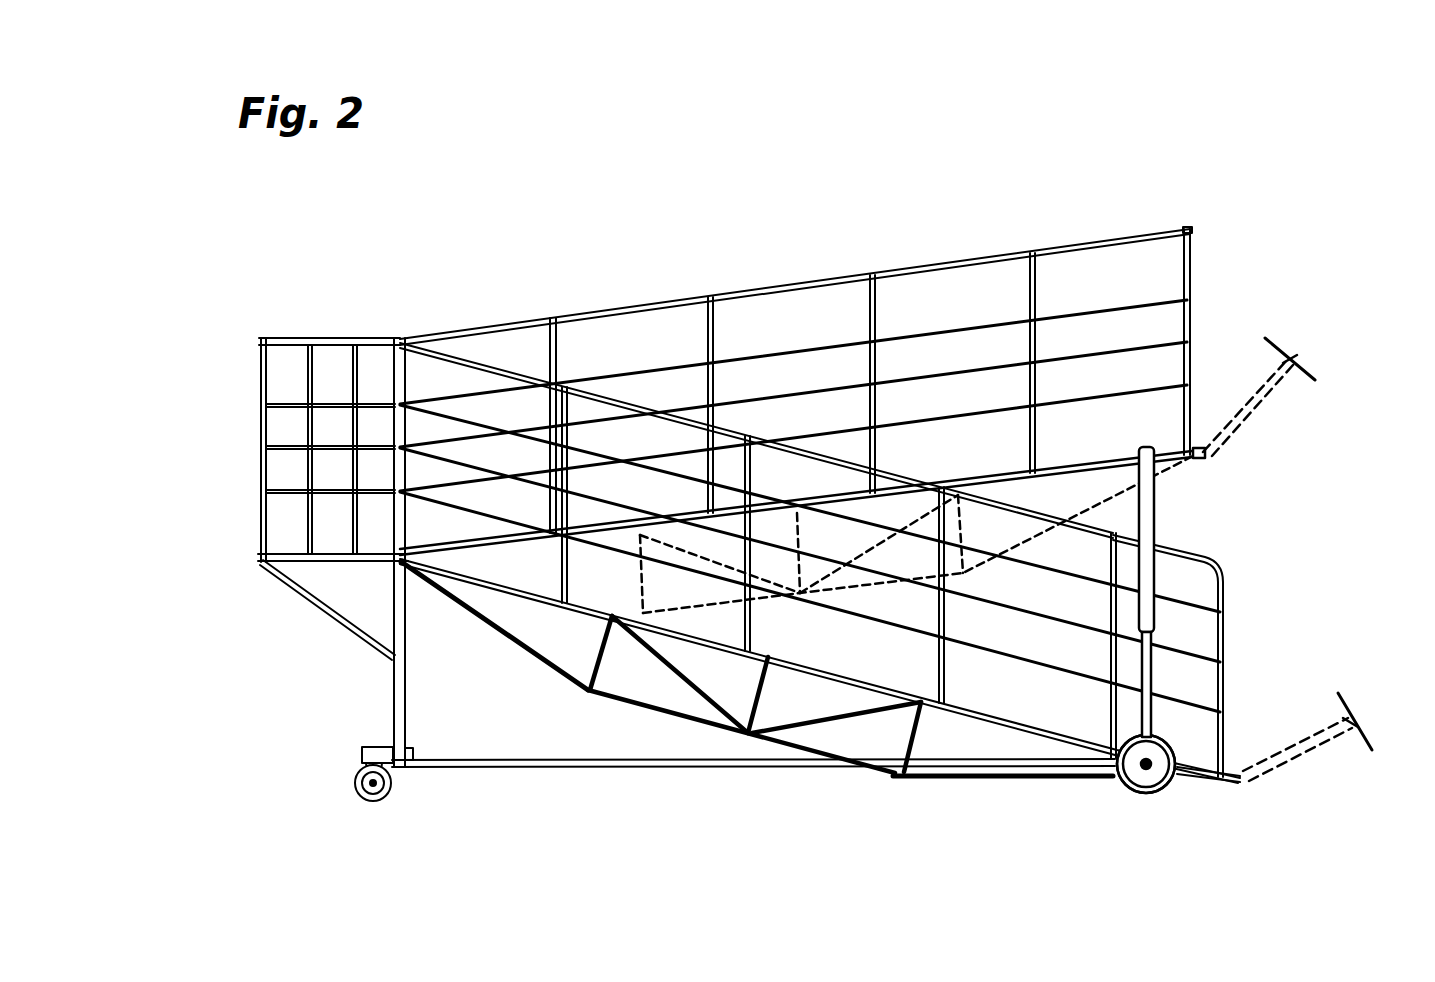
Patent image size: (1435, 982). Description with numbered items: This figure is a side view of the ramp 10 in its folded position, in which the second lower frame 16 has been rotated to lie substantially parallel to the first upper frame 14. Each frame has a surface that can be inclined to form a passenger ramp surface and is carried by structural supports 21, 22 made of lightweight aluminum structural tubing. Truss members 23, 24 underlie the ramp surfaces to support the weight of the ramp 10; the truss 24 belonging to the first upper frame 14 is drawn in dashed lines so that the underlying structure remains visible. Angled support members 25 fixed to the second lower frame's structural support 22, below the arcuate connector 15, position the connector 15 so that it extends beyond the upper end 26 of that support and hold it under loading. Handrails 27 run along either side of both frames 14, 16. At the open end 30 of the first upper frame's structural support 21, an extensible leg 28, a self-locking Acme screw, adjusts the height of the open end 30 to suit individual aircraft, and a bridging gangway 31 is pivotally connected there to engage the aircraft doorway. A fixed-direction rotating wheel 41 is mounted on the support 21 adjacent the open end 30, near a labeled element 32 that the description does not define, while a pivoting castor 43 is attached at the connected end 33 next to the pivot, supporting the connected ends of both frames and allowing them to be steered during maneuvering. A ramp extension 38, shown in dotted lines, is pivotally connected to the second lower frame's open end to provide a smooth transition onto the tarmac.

The ramp 10 is at (1241, 113).
The first upper frame 14 is at (1230, 503).
The arcuate connector 15 is at (274, 450).
The second lower frame 16 is at (1003, 804).
The structural support 21 is at (816, 709).
The structural support 22 is at (495, 650).
The truss member 23 is at (742, 694).
The truss member 24 is at (826, 503).
The angled support members 25 is at (323, 645).
The upper end 26 is at (311, 552).
The handrails 27 is at (861, 455).
The extensible leg 28 is at (1221, 655).
The open end 30 is at (1272, 449).
The bridging gangway 31 is at (1280, 397).
The wheel 32 is at (1146, 807).
The connected end 33 is at (369, 812).
The ramp extension 38 is at (1323, 741).
The fixed-direction rotating wheel 41 is at (1183, 790).
The castor 43 is at (320, 791).